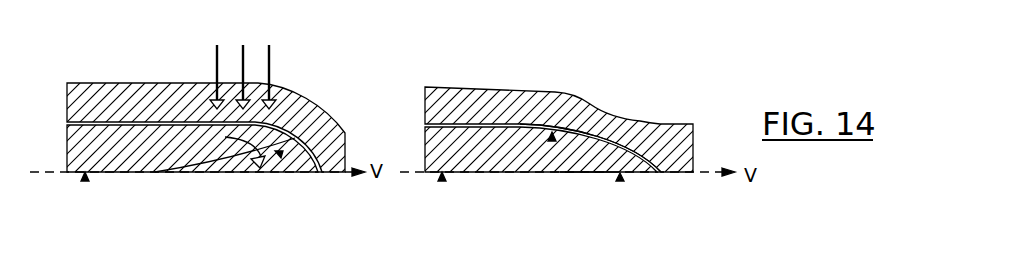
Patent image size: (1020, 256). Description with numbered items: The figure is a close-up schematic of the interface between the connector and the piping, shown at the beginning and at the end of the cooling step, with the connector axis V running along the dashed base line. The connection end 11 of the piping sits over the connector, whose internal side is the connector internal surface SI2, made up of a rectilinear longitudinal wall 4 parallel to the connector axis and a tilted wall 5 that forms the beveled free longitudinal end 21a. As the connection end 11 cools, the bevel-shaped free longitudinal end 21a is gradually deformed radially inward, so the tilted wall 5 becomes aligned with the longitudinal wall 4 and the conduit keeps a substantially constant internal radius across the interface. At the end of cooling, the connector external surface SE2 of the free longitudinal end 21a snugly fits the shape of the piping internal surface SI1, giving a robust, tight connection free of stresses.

The connection end 11 is at (116, 83).
The rectilinear longitudinal wall 4 is at (123, 174).
The tilted wall 5 is at (214, 173).
The free longitudinal end 21a is at (280, 155).
The piping internal surface SI1 is at (284, 120).
The connector internal surface SI2 is at (85, 181).
The connector external surface SE2 is at (552, 141).